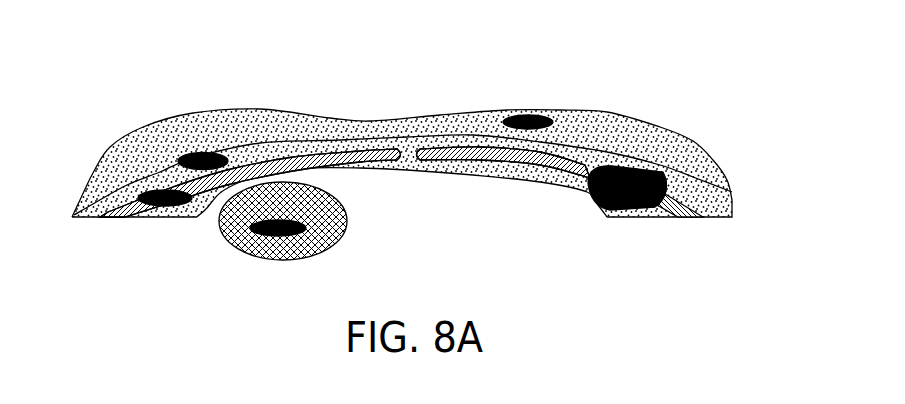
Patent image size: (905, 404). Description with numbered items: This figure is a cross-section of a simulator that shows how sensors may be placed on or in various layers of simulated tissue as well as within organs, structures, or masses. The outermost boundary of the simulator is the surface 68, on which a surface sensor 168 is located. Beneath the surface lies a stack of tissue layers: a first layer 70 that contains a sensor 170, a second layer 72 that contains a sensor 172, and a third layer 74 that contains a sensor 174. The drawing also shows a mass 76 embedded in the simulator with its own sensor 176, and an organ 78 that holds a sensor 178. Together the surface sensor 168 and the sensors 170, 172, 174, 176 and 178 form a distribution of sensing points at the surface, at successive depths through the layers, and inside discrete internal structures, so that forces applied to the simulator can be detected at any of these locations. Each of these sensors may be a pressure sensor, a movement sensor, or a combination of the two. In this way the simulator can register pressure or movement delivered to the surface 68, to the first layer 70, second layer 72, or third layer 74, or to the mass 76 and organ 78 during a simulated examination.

The surface 68 is at (628, 111).
The first layer 70 is at (704, 157).
The second layer 72 is at (717, 198).
The third layer 74 is at (687, 218).
The mass 76 is at (588, 197).
The organ 78 is at (340, 212).
The surface sensor 168 is at (530, 110).
The sensor 170 is at (581, 108).
The sensor 172 is at (200, 152).
The sensor 174 is at (170, 210).
The sensor 176 is at (643, 170).
The sensor 178 is at (278, 256).